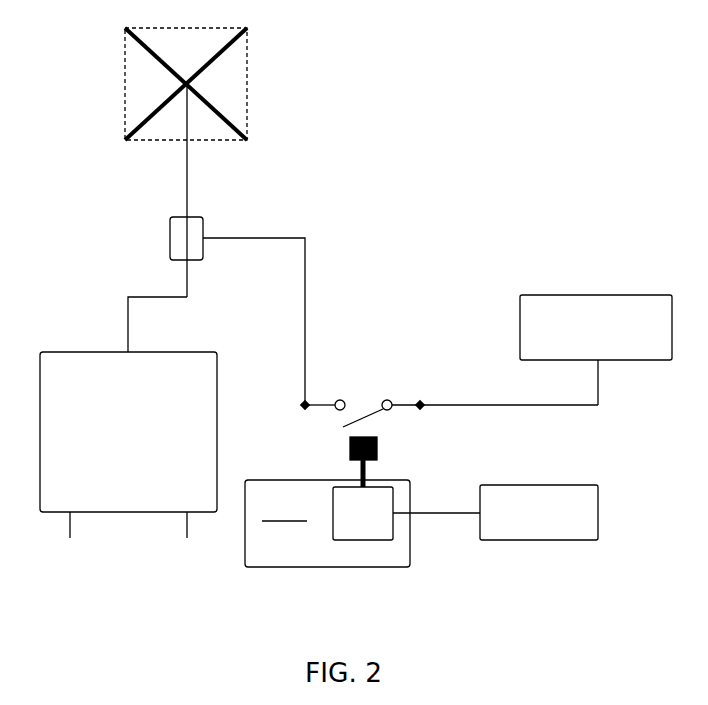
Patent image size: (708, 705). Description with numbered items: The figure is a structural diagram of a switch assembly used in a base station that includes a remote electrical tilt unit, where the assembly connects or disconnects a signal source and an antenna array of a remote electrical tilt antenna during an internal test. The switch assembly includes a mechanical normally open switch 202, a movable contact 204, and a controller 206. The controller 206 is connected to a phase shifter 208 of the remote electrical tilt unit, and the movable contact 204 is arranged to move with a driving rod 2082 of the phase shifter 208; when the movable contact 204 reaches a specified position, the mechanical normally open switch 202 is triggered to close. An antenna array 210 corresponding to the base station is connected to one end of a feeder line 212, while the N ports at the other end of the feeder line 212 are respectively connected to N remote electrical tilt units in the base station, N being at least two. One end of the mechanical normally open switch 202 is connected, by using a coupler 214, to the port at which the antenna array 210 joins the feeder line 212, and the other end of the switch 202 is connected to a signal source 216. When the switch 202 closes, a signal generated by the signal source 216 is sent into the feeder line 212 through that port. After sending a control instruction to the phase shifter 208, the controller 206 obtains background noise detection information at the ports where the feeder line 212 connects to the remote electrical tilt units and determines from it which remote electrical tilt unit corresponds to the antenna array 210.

The antenna array 210 is at (249, 75).
The coupler 214 is at (205, 230).
The feeder line 212 is at (90, 365).
The mechanical normally open switch 202 is at (415, 395).
The movable contact 204 is at (380, 448).
The phase shifter 208 is at (358, 547).
The driving rod 2082 is at (350, 470).
The signal source 216 is at (606, 292).
The controller 206 is at (565, 482).